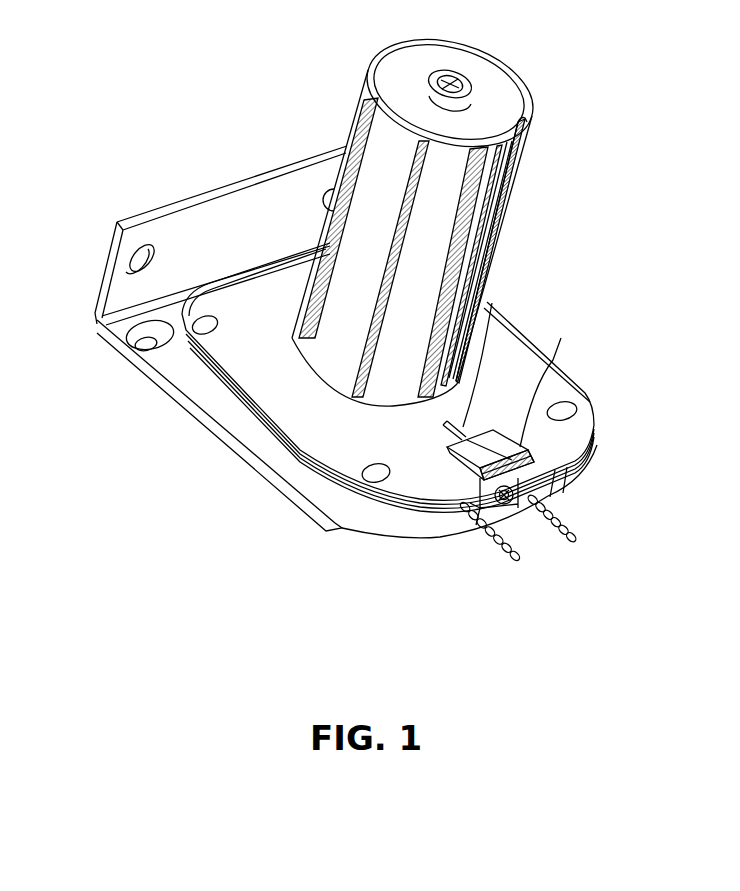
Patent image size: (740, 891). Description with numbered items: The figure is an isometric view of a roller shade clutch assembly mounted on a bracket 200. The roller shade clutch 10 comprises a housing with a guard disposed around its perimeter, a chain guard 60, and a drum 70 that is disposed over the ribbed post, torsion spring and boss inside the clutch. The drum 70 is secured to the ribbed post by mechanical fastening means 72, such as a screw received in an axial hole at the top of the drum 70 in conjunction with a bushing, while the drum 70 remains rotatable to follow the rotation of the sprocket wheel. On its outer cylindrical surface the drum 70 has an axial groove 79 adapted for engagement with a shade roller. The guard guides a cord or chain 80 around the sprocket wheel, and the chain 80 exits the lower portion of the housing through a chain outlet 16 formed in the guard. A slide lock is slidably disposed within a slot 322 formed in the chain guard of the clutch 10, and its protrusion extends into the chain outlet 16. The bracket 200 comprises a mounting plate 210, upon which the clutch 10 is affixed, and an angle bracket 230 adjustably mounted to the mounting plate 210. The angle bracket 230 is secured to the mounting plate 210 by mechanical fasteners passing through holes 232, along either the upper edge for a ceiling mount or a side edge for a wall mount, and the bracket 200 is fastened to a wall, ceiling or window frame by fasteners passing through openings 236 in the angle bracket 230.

The roller shade clutch 10 is at (393, 377).
The chain outlet 16 is at (507, 505).
The chain guard 60 is at (255, 401).
The drum 70 is at (433, 214).
The mechanical fastening means 72 is at (474, 78).
The axial groove 79 is at (535, 135).
The chain 80 is at (576, 531).
The bracket 200 is at (320, 342).
The mounting plate 210 is at (327, 427).
The angle bracket 230 is at (198, 235).
The holes 232 is at (137, 344).
The openings 236 is at (100, 279).
The slot 322 is at (465, 420).